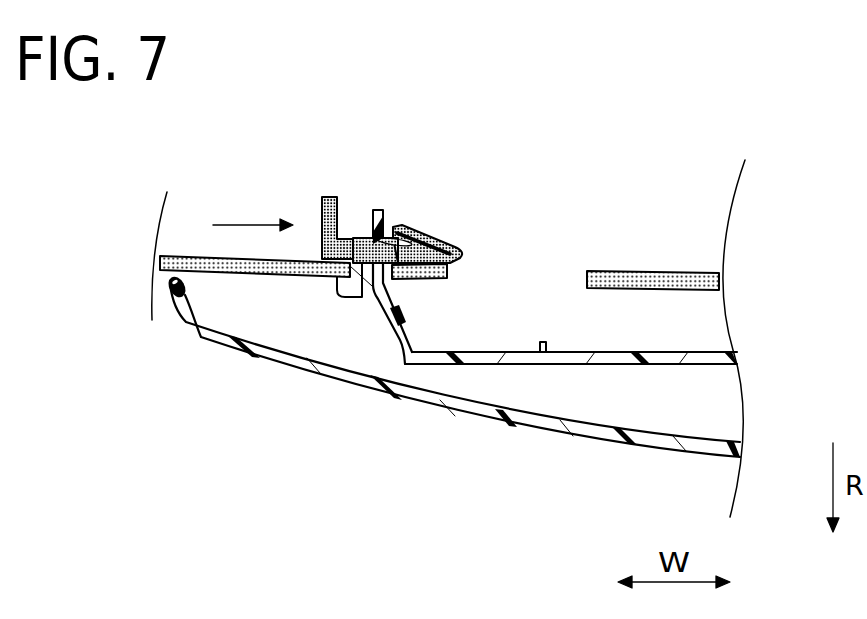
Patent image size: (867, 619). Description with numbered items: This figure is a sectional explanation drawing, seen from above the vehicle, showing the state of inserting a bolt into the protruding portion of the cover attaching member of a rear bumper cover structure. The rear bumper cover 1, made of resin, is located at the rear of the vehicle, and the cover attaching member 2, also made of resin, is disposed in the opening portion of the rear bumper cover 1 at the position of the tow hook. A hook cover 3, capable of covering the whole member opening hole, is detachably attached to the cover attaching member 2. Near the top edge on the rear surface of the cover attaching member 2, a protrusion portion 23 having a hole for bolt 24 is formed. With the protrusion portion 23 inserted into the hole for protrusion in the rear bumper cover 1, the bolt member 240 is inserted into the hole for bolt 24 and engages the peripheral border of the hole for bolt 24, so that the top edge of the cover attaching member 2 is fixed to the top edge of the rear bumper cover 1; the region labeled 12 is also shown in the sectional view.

The rear bumper cover 1 is at (243, 290).
The cover attaching member 2 is at (567, 374).
The hook cover 3 is at (410, 416).
The engagement hole / hook portion 12 is at (371, 262).
The protrusion portion 23 is at (370, 208).
The hole for bolt 24 is at (423, 238).
The bolt member 240 is at (362, 238).